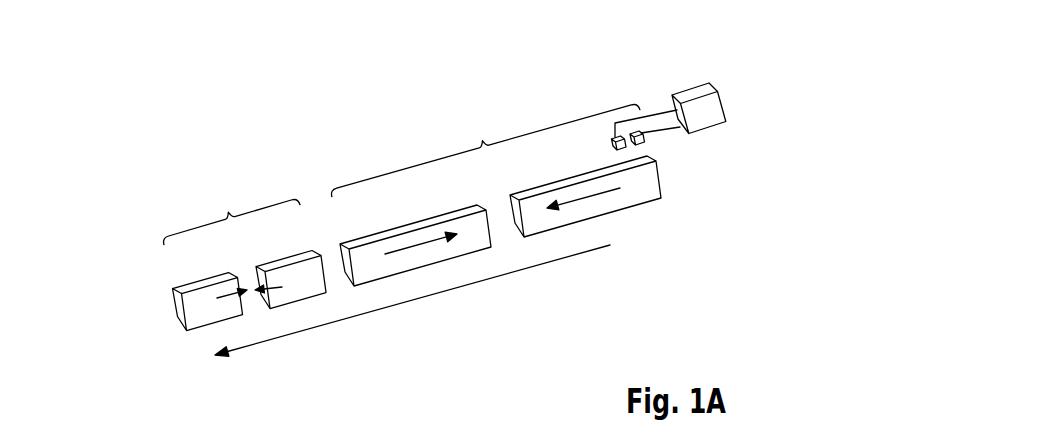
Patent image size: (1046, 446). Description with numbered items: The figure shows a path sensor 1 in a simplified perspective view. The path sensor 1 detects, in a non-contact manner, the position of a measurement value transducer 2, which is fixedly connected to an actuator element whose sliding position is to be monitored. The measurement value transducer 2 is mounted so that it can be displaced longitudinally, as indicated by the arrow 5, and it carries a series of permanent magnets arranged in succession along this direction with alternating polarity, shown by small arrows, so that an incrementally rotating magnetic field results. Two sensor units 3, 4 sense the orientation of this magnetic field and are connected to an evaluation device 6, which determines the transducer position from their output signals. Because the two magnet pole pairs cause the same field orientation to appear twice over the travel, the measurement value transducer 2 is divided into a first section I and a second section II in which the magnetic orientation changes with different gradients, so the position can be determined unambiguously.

The path sensor 1 is at (135, 78).
The measurement value transducer 2 is at (143, 288).
The sensor unit 3 is at (611, 147).
The sensor unit 4 is at (643, 143).
The arrow 5 is at (370, 313).
The evaluation device 6 is at (692, 92).
The first section I is at (485, 150).
The second section II is at (232, 212).